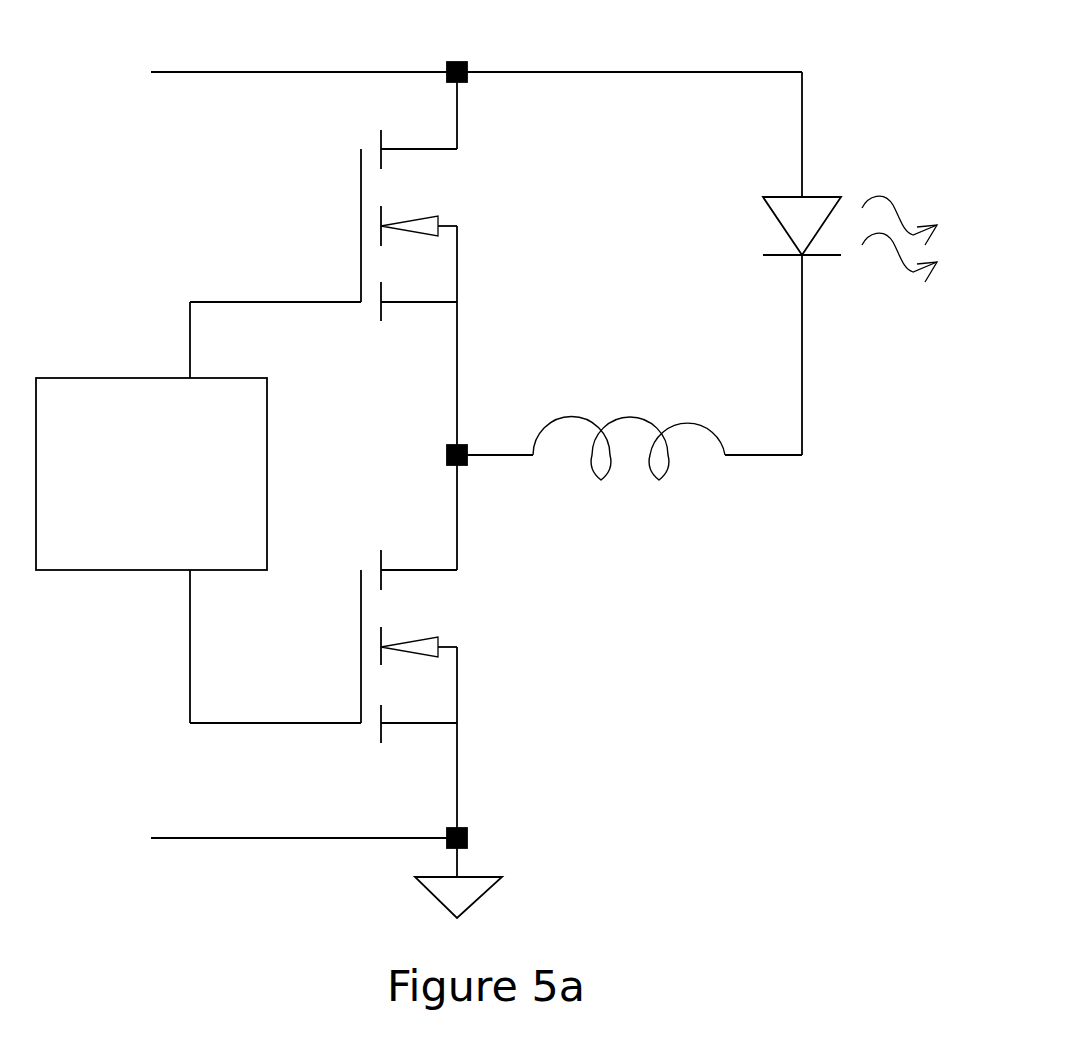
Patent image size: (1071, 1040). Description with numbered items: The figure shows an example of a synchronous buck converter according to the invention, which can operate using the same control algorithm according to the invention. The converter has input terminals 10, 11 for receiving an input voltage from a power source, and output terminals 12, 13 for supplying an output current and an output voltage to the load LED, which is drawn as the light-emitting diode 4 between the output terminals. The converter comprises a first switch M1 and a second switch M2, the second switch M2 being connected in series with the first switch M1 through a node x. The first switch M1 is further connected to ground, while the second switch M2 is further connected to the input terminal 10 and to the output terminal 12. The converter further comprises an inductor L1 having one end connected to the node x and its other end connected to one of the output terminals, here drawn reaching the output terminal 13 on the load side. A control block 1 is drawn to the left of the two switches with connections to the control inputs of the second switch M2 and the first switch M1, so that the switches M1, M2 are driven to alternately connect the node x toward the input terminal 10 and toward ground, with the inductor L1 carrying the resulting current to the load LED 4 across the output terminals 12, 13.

The control circuit 1 is at (151, 512).
The light emitting diode 4 is at (817, 322).
The input terminal 10 is at (476, 41).
The input terminal 11 is at (326, 842).
The output terminal 12 is at (776, 99).
The output terminal 13 is at (764, 491).
The first switch M1 is at (370, 689).
The second switch M2 is at (371, 201).
The inductor L1 is at (596, 483).
The node x is at (415, 398).